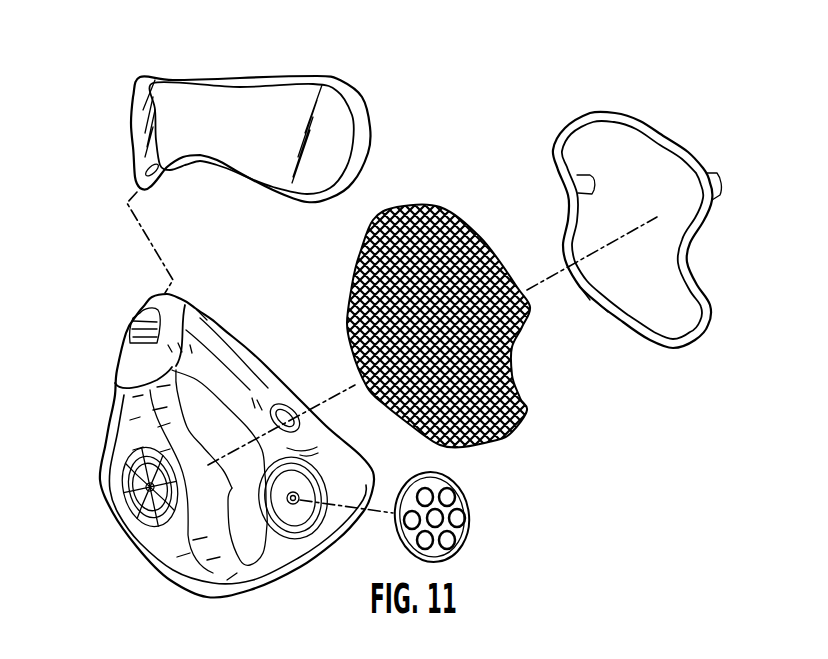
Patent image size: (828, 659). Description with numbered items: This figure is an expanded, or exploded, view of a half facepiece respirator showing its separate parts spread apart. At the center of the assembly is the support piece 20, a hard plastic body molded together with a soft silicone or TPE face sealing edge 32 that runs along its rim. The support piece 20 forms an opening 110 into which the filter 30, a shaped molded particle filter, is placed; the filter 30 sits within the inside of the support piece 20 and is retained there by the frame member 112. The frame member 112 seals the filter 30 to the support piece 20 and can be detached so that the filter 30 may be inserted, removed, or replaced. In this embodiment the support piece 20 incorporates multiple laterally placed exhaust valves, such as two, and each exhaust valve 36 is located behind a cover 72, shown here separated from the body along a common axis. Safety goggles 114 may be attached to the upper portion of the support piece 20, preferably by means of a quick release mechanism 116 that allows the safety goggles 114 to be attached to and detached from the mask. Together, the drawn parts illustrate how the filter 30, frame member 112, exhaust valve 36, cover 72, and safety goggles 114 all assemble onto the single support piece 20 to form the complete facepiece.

The opening 110 is at (203, 449).
The support piece 20 is at (177, 567).
The face sealing edge 32 is at (257, 352).
The exhaust valve 36 is at (290, 520).
The filter 30 is at (530, 413).
The cover 72 is at (470, 522).
The frame member 112 is at (605, 117).
The safety goggles 114 is at (163, 100).
The quick release mechanism 116 is at (133, 328).